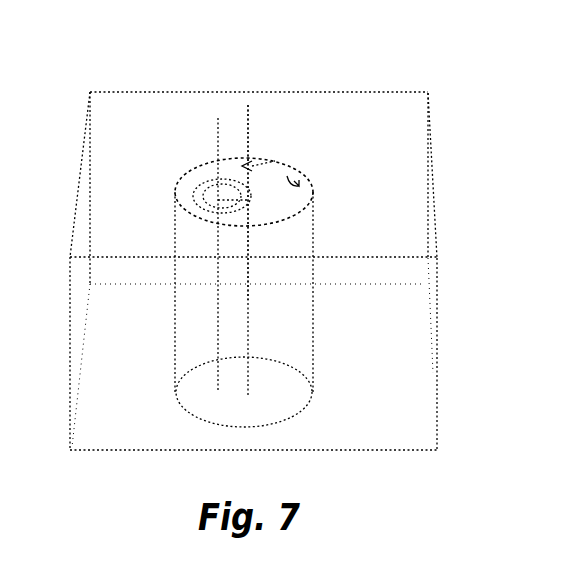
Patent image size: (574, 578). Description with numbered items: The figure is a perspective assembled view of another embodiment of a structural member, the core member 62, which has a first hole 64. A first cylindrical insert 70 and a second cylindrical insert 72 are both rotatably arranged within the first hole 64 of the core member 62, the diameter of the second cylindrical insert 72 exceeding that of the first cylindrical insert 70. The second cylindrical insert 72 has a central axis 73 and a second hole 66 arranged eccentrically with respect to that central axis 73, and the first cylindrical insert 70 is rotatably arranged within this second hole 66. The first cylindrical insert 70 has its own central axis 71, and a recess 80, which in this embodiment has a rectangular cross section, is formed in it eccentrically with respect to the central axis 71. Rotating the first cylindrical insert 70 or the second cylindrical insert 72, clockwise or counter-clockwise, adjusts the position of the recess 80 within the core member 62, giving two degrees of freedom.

The core member 62 is at (312, 108).
The first hole 64 is at (313, 190).
The second hole 66 is at (201, 198).
The first cylindrical insert 70 is at (205, 198).
The central axis 71 is at (218, 115).
The second cylindrical insert 72 is at (297, 202).
The central axis 73 is at (250, 107).
The recess 80 is at (237, 190).